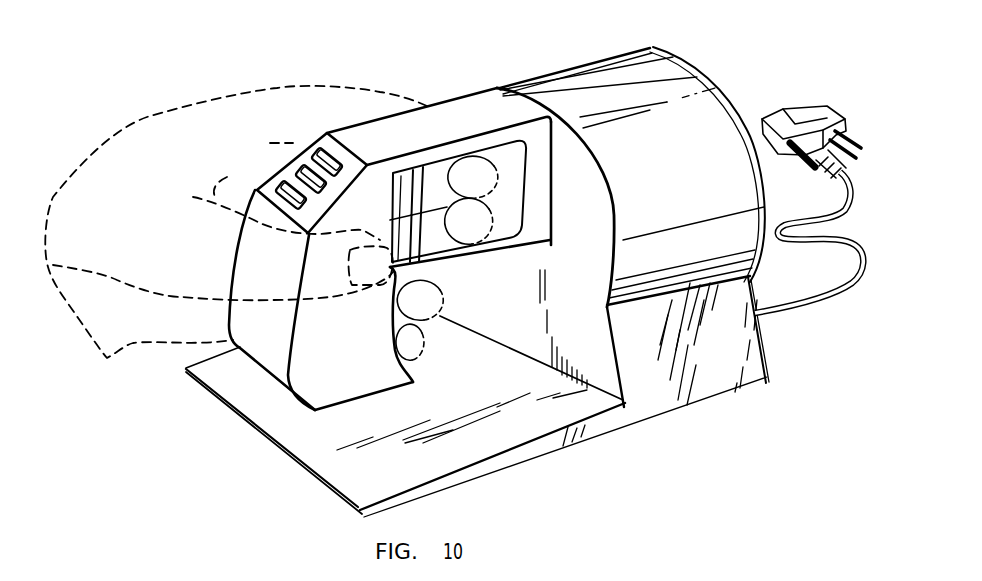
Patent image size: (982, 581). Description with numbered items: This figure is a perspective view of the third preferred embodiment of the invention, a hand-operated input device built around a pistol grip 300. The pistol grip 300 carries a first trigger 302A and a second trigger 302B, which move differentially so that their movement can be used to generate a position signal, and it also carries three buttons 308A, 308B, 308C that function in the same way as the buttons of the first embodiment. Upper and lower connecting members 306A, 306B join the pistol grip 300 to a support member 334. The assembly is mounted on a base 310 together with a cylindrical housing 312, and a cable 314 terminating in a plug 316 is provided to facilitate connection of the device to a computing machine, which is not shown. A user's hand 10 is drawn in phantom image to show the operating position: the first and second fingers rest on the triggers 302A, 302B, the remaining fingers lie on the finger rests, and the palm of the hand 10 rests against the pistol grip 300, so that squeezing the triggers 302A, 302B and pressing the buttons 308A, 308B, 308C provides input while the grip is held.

The user's hand 10 is at (270, 88).
The pistol grip 300 is at (361, 320).
The first trigger 302A is at (431, 180).
The second trigger 302B is at (430, 227).
The upper connecting member 306A is at (450, 197).
The lower connecting member 306B is at (483, 250).
The first button 308A is at (323, 160).
The second button 308B is at (303, 174).
The third button 308C is at (282, 193).
The base 310 is at (598, 426).
The cylindrical housing 312 is at (690, 167).
The cable 314 is at (823, 282).
The plug 316 is at (805, 118).
The support member 334 is at (538, 148).